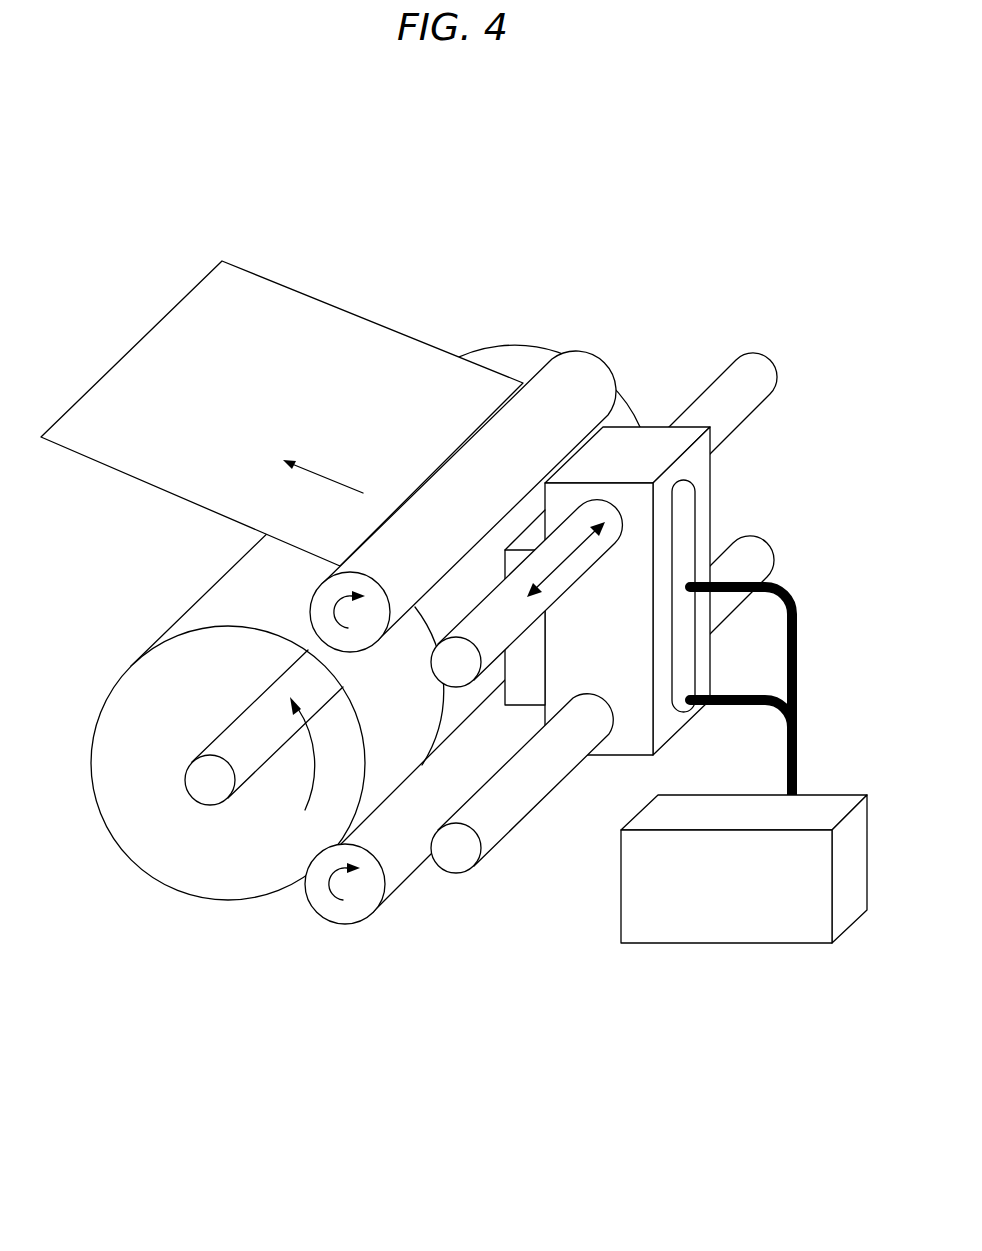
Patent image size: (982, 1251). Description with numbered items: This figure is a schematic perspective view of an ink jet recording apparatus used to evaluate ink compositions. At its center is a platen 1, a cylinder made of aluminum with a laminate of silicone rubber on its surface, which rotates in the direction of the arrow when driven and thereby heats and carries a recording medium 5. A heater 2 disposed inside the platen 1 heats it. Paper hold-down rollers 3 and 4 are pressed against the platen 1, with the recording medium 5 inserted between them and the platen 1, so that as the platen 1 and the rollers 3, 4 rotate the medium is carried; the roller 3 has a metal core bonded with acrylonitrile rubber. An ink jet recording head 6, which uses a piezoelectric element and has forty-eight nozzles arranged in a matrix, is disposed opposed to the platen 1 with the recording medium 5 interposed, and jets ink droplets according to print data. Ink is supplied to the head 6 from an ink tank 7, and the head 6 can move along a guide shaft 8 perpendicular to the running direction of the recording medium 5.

The platen 1 is at (178, 892).
The heater 2 is at (217, 807).
The paper hold-down roller 3 is at (358, 924).
The paper hold-down roller 4 is at (560, 347).
The recording medium 5 is at (343, 328).
The ink jet recording head 6 is at (527, 685).
The ink tank 7 is at (740, 893).
The guide shaft 8 is at (747, 550).